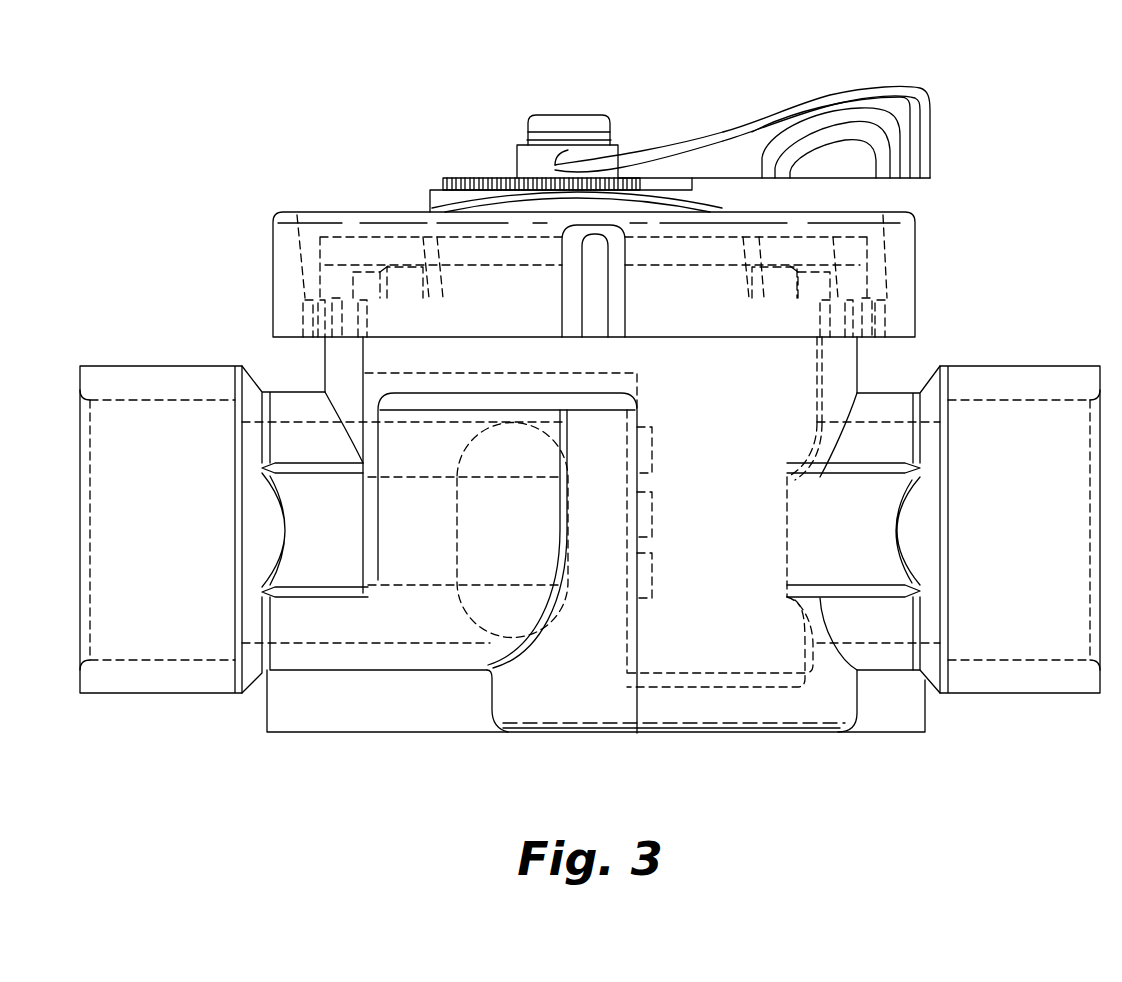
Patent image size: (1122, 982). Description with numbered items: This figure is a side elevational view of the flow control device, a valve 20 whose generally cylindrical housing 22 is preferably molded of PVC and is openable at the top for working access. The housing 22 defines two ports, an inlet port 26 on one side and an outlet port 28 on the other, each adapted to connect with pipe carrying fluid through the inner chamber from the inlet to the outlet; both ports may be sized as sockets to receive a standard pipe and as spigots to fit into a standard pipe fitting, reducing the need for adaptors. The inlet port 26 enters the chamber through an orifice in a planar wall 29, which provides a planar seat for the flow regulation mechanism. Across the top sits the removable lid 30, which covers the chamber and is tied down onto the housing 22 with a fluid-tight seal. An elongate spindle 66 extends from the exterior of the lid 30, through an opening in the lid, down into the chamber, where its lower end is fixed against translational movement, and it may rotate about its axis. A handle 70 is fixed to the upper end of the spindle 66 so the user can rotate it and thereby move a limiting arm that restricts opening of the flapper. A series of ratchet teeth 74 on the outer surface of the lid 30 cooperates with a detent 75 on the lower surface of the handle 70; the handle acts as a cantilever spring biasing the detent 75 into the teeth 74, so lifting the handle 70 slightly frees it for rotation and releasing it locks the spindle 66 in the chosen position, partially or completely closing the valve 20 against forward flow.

The valve 20 is at (643, 88).
The housing 22 is at (732, 645).
The inlet port 26 is at (149, 366).
The outlet port 28 is at (1017, 366).
The planar wall 29 is at (568, 673).
The removable lid 30 is at (917, 251).
The spindle 66 is at (560, 113).
The handle 70 is at (862, 122).
The ratchet teeth 74 is at (442, 178).
The detent 75 is at (668, 183).